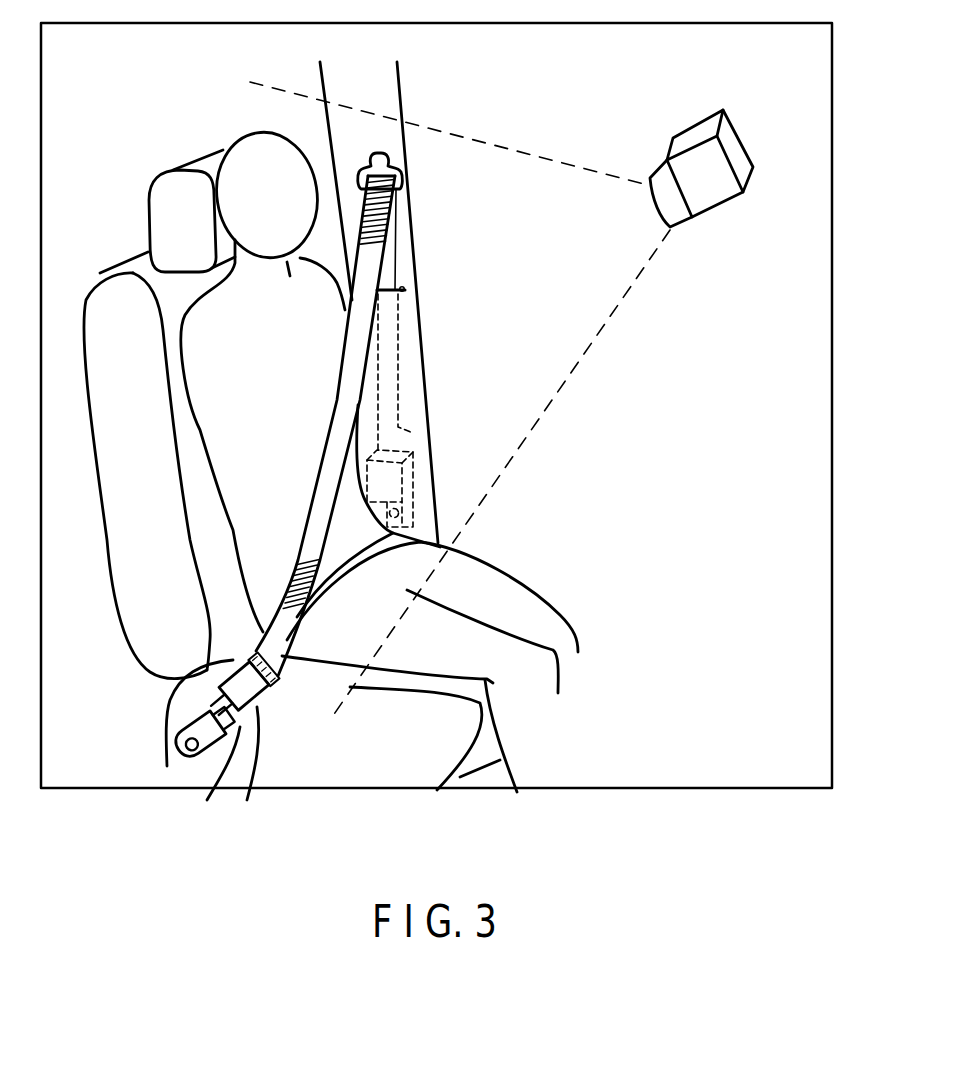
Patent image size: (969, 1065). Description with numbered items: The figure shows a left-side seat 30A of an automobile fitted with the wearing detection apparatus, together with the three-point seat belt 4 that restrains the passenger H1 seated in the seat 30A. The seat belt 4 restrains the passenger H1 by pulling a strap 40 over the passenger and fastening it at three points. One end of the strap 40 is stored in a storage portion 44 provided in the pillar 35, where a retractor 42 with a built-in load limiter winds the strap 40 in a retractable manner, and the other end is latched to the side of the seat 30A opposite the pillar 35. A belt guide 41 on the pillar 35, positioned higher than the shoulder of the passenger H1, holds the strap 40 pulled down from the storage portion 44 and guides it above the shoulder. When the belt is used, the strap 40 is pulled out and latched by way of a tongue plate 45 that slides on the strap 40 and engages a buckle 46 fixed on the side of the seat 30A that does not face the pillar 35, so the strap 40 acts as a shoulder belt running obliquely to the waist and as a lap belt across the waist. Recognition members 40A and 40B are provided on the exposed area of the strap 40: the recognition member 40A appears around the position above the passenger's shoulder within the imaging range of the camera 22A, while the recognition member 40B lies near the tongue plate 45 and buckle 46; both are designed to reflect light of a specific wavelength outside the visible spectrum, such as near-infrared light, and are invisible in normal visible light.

The camera 22A is at (697, 122).
The pillar 35 is at (388, 92).
The belt guide 41 is at (390, 155).
The recognition member 40A is at (383, 213).
The seat belt 4 is at (458, 271).
The storage portion 44 is at (412, 313).
The strap 40 is at (352, 365).
The retractor 42 is at (408, 475).
The passenger H1 is at (203, 320).
The left-side seat 30A is at (124, 576).
The recognition member 40B is at (317, 583).
The buckle 46 is at (242, 723).
The tongue plate 45 is at (255, 700).